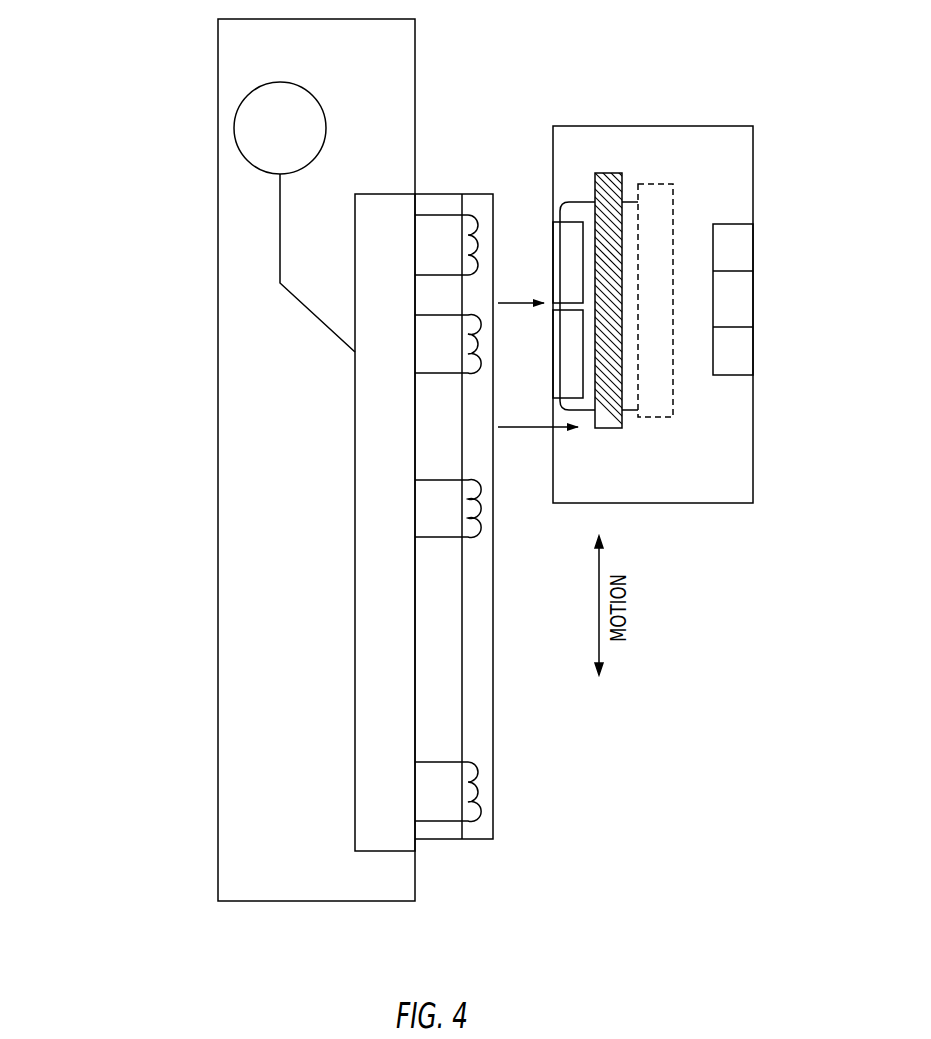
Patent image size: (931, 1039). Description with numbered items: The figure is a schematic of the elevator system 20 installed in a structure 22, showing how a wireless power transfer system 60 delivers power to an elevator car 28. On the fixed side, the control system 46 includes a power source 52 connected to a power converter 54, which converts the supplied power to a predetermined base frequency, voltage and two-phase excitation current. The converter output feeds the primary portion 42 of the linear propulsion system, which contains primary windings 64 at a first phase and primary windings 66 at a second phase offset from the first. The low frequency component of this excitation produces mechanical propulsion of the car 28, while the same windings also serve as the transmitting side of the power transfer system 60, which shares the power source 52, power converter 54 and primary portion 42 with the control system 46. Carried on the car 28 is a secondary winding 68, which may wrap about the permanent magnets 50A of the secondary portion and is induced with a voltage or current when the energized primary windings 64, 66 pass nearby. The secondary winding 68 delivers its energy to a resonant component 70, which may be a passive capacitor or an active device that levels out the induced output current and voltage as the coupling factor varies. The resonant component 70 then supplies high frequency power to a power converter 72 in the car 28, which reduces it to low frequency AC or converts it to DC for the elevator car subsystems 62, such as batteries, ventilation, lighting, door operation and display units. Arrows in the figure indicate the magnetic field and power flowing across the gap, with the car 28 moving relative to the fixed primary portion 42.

The elevator system 20 is at (93, 117).
The structure 22 is at (287, 902).
The car 28 is at (753, 444).
The primary portion 42 is at (440, 866).
The control system 46 is at (281, 317).
The permanent magnets 50A is at (553, 365).
The power source 52 is at (270, 83).
The power converter 54 is at (393, 194).
The wireless power transfer system 60 is at (531, 531).
The elevator car subsystems 62 is at (753, 293).
The primary windings at a first phase 64 is at (482, 225).
The primary windings at a second phase 66 is at (480, 327).
The secondary winding 68 is at (572, 202).
The resonant component 70 is at (610, 173).
The power converter 72 is at (673, 219).